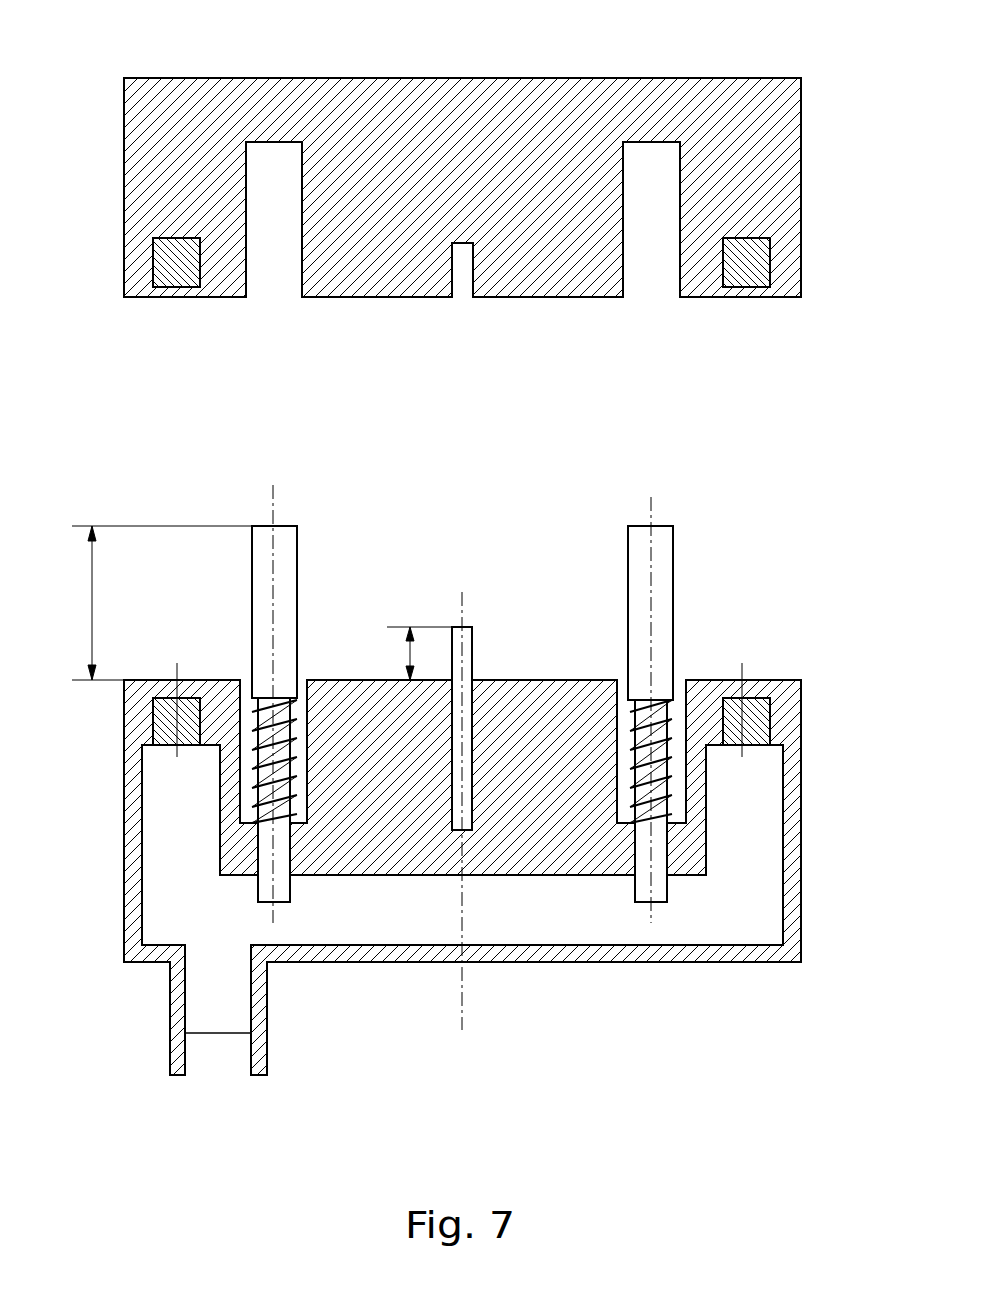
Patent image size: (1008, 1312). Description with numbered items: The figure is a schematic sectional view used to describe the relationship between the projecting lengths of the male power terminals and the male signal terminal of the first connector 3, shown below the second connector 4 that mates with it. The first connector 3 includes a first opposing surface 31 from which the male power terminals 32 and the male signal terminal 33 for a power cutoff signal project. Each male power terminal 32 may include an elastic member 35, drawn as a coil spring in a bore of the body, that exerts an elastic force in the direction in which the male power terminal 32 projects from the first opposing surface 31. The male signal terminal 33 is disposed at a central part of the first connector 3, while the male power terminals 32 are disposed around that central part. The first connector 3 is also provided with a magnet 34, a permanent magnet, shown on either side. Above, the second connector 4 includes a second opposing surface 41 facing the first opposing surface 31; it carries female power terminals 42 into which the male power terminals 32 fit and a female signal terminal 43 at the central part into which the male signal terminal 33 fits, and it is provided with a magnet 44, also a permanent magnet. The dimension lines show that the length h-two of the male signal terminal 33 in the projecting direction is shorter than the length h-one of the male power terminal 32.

The second connector 4 is at (479, 222).
The second opposing surface 41 is at (540, 303).
The female power terminals 42 is at (250, 297).
The female signal terminal 43 is at (458, 297).
The magnet 44 is at (170, 280).
The first connector 3 is at (461, 772).
The first opposing surface 31 is at (600, 672).
The male power terminals 32 is at (286, 597).
The male signal terminal 33 is at (472, 652).
The magnet 34 is at (188, 713).
The elastic member 35 is at (672, 791).